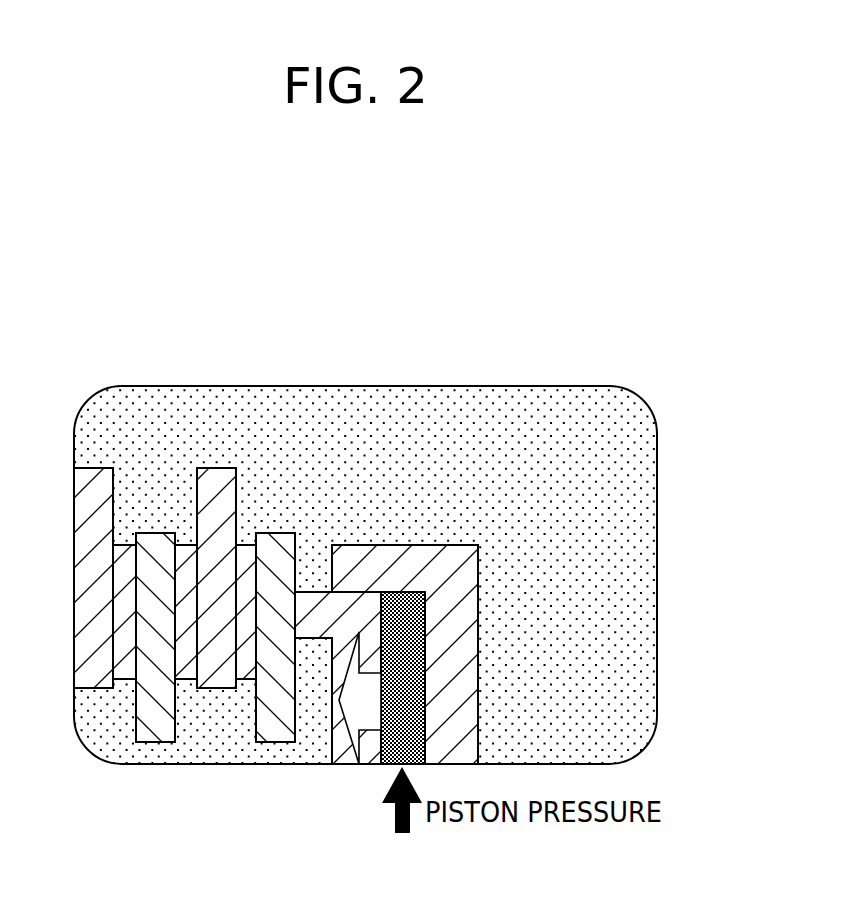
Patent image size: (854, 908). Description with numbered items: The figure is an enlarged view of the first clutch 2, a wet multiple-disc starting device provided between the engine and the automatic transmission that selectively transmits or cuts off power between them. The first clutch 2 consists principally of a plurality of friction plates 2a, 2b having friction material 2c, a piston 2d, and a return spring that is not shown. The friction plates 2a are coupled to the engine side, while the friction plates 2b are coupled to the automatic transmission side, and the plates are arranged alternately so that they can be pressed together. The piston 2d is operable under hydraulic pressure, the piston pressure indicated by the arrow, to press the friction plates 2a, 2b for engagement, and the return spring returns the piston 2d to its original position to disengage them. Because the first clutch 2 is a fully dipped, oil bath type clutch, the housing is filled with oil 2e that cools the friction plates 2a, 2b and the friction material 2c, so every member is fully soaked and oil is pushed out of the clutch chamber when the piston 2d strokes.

The first clutch 2 is at (624, 307).
The friction plates 2a is at (219, 468).
The friction plates 2b is at (272, 728).
The friction material 2c is at (241, 545).
The piston 2d is at (327, 612).
The oil 2e is at (628, 538).